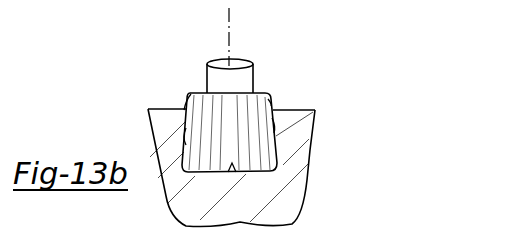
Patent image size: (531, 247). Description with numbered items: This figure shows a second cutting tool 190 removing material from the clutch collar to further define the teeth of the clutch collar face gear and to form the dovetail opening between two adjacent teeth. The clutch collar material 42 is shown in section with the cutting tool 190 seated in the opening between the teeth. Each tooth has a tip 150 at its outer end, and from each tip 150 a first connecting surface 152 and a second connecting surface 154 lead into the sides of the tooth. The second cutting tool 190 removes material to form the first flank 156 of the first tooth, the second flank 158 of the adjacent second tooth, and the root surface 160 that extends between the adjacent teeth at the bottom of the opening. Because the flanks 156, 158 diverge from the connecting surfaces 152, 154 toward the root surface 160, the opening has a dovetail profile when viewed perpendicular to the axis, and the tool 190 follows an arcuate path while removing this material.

The body 42 is at (309, 148).
The tip 150 is at (158, 108).
The first connecting surface 152 is at (270, 100).
The second connecting surface 154 is at (185, 109).
The first flank 156 is at (276, 124).
The second flank 158 is at (185, 138).
The root surface 160 is at (229, 174).
The second cutting tool 190 is at (242, 132).